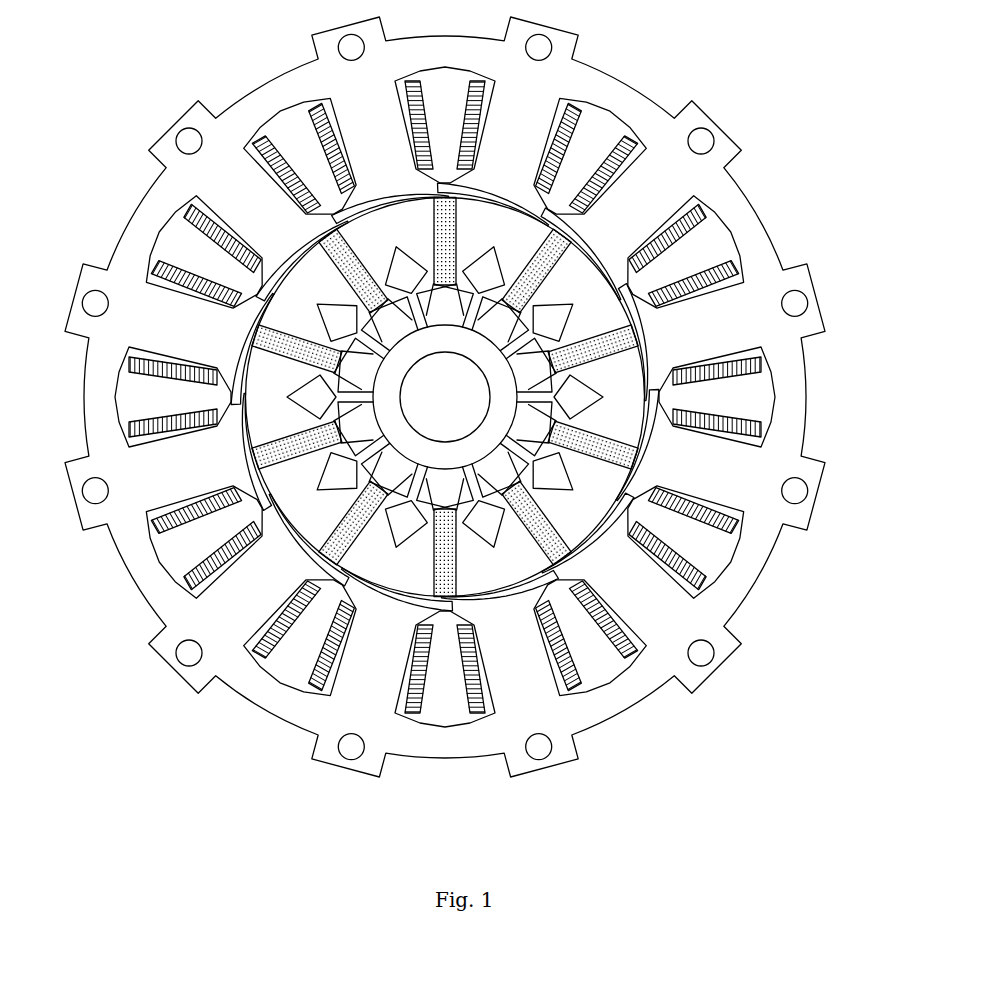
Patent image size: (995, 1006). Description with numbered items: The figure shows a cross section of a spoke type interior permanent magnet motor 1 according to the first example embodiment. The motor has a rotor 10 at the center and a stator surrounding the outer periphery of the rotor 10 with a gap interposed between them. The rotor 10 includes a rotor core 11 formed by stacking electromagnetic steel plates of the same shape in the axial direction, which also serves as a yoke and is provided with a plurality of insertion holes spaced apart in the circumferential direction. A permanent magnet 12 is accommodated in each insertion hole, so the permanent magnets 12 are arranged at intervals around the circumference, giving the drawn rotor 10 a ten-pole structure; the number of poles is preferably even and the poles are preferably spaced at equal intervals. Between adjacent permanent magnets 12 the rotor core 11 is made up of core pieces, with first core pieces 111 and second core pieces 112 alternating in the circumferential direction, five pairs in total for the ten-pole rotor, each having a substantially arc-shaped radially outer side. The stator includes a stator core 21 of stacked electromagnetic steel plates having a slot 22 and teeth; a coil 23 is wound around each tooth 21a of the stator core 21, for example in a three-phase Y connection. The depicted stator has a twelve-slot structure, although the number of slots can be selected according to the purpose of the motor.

The spoke type IPM motor 1 is at (652, 773).
The rotor 10 is at (497, 527).
The rotor core 11 is at (445, 527).
The first core piece 111 is at (418, 578).
The second core piece 112 is at (465, 578).
The permanent magnet 12 is at (577, 566).
The stator core 21 is at (796, 360).
The tooth 21a is at (707, 493).
The slot 22 is at (732, 258).
The coil 23 is at (168, 503).